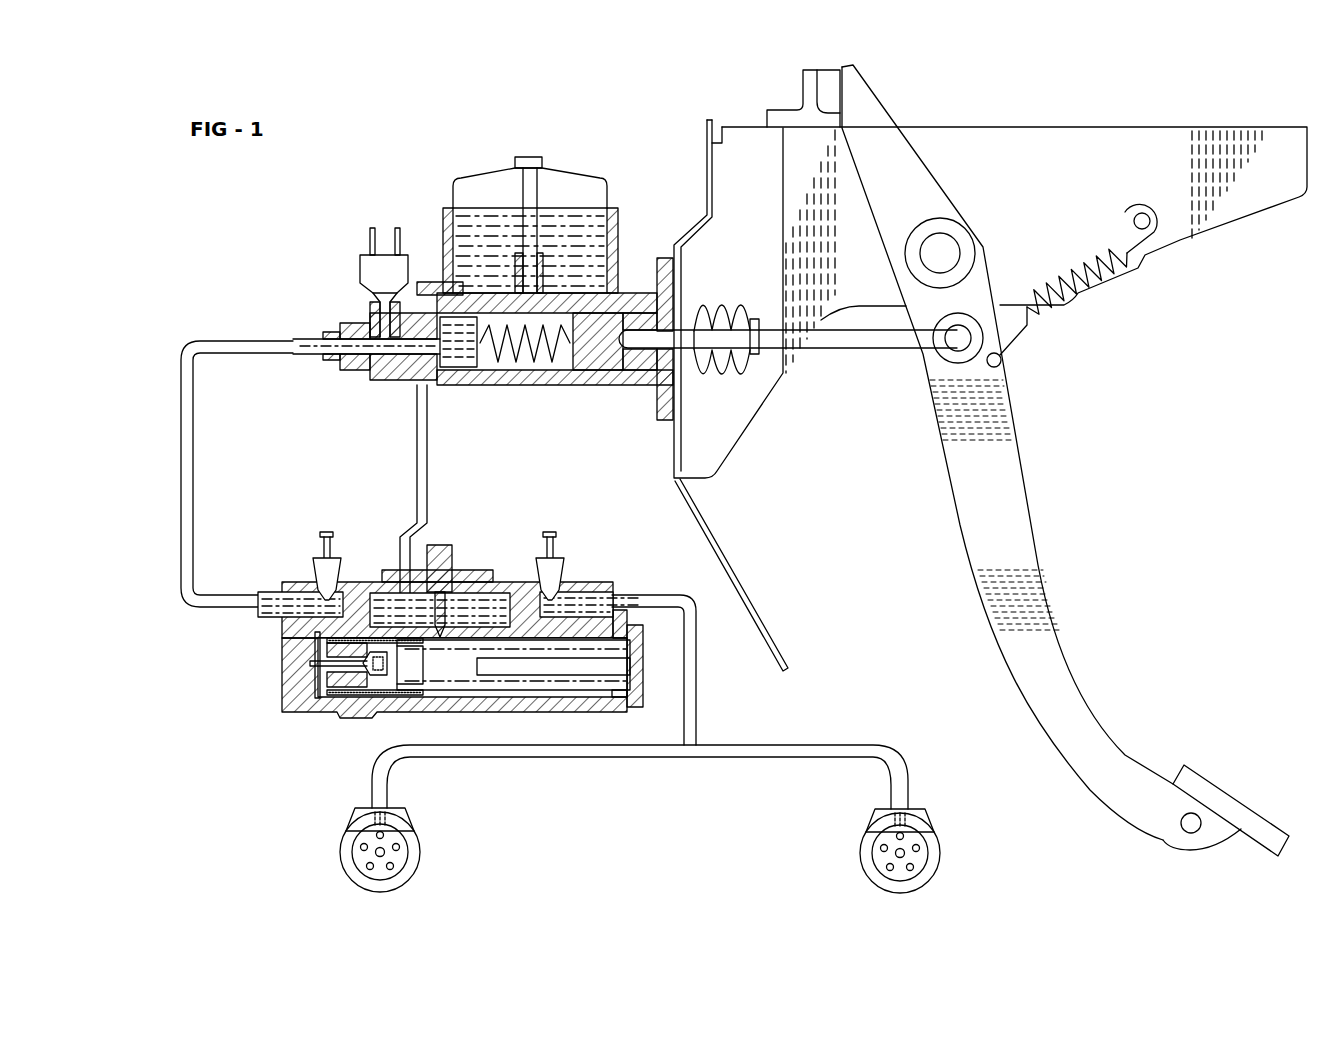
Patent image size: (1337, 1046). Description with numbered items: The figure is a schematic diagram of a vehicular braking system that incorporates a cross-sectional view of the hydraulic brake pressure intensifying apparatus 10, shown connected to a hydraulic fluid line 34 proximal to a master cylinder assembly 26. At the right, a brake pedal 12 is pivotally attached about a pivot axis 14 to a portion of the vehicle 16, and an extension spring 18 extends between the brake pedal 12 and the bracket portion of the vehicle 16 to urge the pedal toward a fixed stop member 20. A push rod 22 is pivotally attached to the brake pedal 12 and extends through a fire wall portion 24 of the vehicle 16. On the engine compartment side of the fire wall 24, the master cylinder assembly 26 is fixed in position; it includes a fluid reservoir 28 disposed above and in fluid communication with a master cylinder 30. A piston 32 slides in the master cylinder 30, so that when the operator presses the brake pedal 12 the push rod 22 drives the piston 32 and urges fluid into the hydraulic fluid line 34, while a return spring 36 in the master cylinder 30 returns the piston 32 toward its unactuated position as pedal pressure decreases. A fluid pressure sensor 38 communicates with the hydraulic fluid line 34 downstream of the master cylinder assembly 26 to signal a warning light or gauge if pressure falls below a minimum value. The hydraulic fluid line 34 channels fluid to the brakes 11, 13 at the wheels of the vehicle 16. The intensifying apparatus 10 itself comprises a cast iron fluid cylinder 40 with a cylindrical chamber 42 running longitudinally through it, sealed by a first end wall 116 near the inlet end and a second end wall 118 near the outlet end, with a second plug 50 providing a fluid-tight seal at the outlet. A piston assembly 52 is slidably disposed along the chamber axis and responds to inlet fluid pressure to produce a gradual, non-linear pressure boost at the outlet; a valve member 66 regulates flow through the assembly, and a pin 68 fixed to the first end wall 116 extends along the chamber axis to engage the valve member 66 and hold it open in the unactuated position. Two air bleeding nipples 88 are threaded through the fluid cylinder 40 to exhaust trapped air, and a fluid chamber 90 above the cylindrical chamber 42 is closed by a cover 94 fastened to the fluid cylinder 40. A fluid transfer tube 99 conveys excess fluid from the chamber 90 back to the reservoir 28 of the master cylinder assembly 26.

The hydraulic brake pressure intensifying apparatus 10 is at (566, 522).
The brake 11 is at (340, 857).
The brake pedal 12 is at (1245, 800).
The brake 13 is at (860, 860).
The pivot axis 14 is at (950, 250).
The vehicle 16 is at (1210, 128).
The extension spring 18 is at (1078, 305).
The fixed stop member 20 is at (830, 76).
The push rod 22 is at (866, 340).
The fire wall portion 24 is at (672, 482).
The master cylinder assembly 26 is at (572, 165).
The fluid reservoir 28 is at (598, 245).
The master cylinder 30 is at (465, 372).
The piston 32 is at (585, 372).
The hydraulic fluid line 34 is at (260, 338).
The return spring 36 is at (524, 367).
The fluid pressure sensor 38 is at (360, 270).
The fluid cylinder 40 is at (283, 712).
The cylindrical chamber 42 is at (523, 692).
The second plug 50 is at (643, 642).
The piston assembly 52 is at (416, 698).
The valve member 66 is at (363, 682).
The pin 68 is at (315, 657).
The air bleeding nipples 88 is at (322, 528).
The fluid chamber 90 is at (472, 597).
The cover 94 is at (388, 572).
The fluid transfer tube 99 is at (420, 452).
The first end wall 116 is at (313, 689).
The second end wall 118 is at (643, 698).